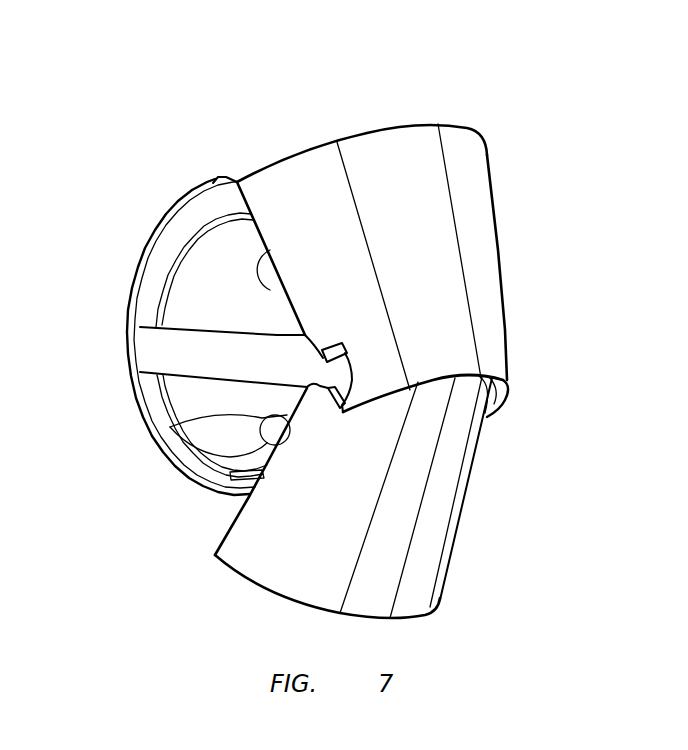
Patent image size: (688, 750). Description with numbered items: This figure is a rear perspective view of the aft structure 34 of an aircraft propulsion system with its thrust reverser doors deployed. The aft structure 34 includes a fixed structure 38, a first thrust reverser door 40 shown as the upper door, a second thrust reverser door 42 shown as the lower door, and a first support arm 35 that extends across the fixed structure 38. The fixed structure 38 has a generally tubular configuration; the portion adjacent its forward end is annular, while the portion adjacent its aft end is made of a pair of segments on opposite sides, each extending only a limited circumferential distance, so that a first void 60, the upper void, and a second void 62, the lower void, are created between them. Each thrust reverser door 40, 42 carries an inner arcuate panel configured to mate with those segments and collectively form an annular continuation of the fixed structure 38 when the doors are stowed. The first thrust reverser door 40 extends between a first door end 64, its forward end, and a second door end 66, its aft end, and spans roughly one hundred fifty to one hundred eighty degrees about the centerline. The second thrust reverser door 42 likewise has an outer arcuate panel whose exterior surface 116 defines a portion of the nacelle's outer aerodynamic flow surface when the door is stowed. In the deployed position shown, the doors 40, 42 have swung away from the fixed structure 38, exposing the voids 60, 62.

The aft structure 34 is at (538, 133).
The first support arm 35 is at (155, 360).
The fixed structure 38 is at (177, 295).
The first thrust reverser door 40 is at (410, 258).
The second thrust reverser door 42 is at (382, 497).
The first void 60 is at (263, 265).
The second void 62 is at (170, 427).
The first door end 64 is at (423, 121).
The second door end 66 is at (486, 416).
The exterior surface 116 is at (440, 565).